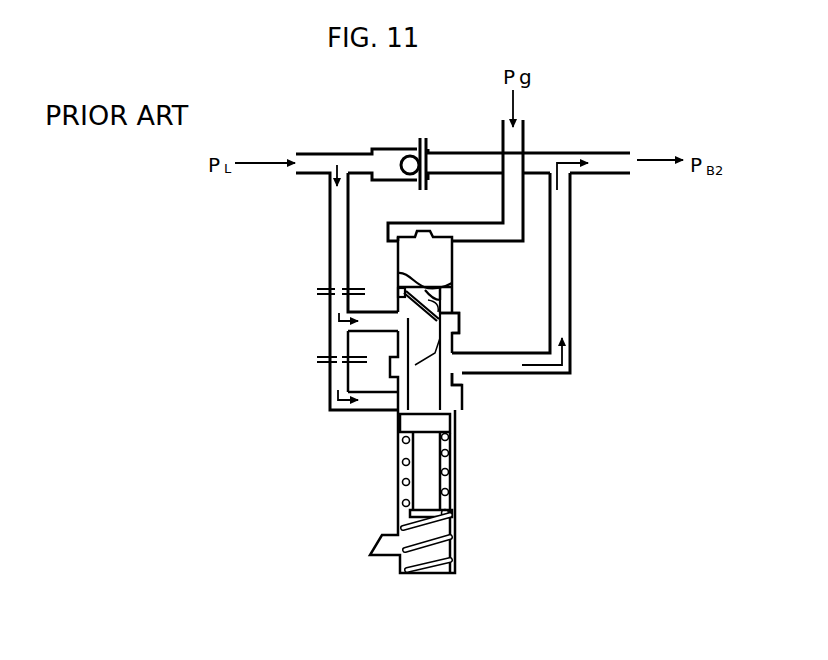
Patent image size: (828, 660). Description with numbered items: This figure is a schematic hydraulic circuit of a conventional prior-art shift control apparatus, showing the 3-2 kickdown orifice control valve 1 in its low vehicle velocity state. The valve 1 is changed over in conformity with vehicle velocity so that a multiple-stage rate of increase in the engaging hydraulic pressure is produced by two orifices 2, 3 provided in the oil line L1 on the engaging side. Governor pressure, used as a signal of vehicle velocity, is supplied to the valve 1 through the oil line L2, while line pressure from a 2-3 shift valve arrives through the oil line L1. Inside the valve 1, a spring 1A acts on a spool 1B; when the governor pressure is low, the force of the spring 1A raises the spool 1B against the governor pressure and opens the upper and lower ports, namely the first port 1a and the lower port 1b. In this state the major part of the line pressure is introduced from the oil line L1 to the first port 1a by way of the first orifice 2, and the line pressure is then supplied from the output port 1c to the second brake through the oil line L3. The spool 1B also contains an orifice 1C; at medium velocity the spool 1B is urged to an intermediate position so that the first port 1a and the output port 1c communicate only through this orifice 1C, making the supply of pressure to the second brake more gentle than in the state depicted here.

The oil line on the engaging side L1 is at (330, 238).
The oil line L2 is at (483, 223).
The oil line L3 is at (572, 296).
The 3-2 kickdown orifice control valve 1 is at (432, 402).
The spring 1A is at (453, 528).
The spool 1B is at (461, 336).
The orifice 1C is at (450, 296).
The first port 1a is at (400, 318).
The lower port 1b is at (400, 406).
The output port 1c is at (462, 378).
The first orifice 2 is at (323, 298).
The orifice 3 is at (323, 366).